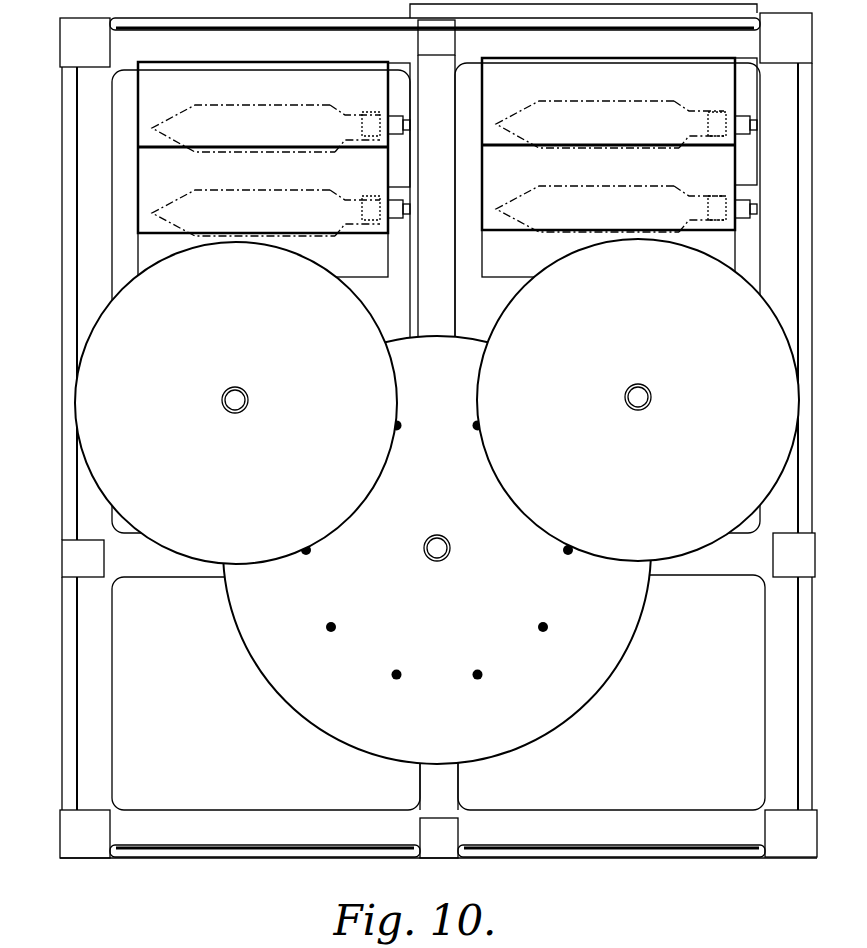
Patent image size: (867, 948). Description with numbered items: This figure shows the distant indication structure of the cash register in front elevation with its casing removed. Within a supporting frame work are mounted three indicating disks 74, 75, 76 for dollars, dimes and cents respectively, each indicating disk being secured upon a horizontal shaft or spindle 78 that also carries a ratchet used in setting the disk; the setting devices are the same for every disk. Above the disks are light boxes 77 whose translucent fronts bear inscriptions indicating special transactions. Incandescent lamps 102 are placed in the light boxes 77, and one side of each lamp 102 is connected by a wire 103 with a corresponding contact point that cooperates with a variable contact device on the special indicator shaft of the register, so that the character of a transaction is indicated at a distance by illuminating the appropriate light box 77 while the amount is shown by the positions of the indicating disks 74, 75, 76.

The indicating disk 74 is at (236, 402).
The indicating disk 75 is at (437, 550).
The indicating disk 76 is at (638, 399).
The light box 77 is at (262, 62).
The horizontal shaft or spindle 78 is at (236, 392).
The incandescent lamp 102 is at (197, 105).
The wire 103 is at (398, 240).